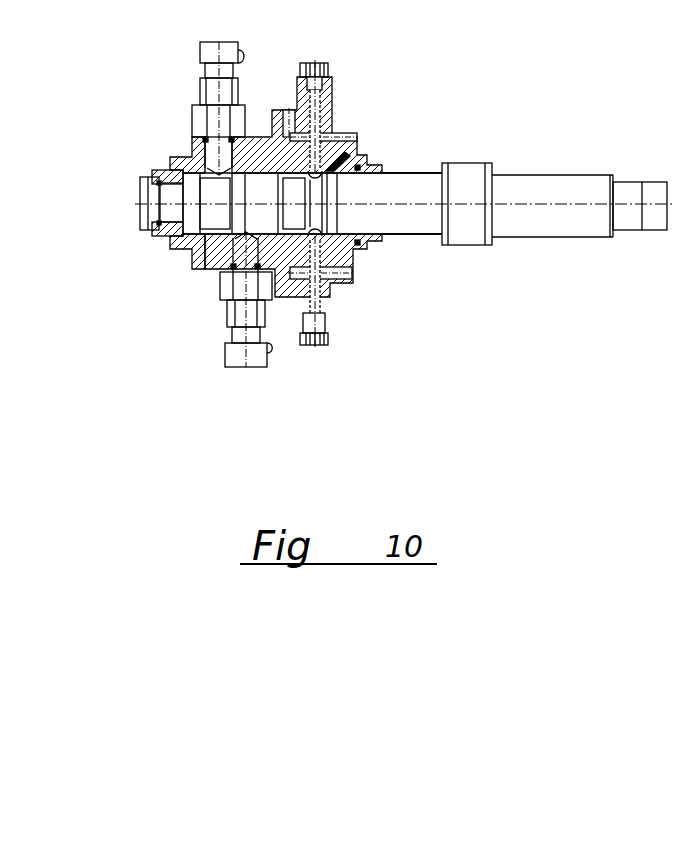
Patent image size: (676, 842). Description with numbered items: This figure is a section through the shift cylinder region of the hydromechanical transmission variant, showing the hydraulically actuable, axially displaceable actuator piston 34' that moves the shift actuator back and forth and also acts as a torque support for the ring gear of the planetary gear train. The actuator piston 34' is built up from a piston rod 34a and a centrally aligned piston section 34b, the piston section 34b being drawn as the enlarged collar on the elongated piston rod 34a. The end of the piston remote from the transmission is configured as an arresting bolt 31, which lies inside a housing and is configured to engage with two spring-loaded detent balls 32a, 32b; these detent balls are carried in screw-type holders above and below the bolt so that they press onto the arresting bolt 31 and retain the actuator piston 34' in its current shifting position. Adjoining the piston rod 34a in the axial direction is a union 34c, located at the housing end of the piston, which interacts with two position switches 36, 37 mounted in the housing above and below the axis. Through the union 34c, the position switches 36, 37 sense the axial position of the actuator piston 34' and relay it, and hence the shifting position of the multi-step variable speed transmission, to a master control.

The arresting bolt 31 is at (330, 166).
The spring-loaded detent ball 32a is at (310, 167).
The spring-loaded detent ball 32b is at (323, 243).
The actuator piston 34' is at (524, 155).
The piston rod 34a is at (415, 223).
The piston section 34b is at (467, 228).
The union 34c is at (232, 225).
The position switch 36 is at (214, 121).
The position switch 37 is at (247, 283).